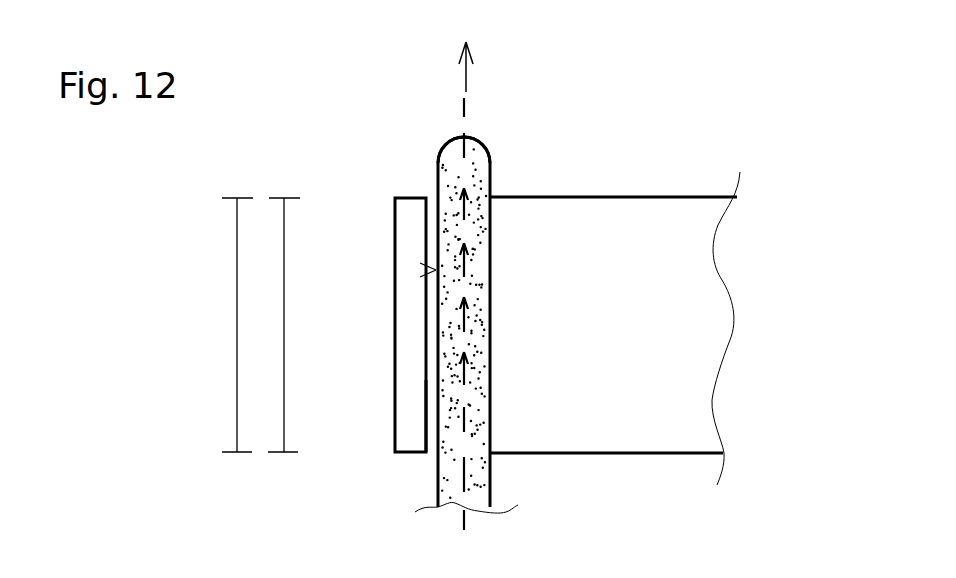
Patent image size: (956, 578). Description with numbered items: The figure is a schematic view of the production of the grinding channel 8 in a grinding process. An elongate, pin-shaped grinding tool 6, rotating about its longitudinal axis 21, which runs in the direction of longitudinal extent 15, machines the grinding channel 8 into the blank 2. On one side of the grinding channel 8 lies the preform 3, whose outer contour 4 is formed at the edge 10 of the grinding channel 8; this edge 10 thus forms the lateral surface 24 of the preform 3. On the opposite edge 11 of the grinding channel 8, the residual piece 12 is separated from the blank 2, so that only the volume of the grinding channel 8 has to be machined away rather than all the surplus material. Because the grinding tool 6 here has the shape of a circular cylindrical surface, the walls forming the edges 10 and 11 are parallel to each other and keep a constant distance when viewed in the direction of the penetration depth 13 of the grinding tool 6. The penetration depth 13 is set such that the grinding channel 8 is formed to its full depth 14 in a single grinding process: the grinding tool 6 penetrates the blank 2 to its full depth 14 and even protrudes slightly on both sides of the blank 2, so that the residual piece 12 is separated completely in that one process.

The blank 2 is at (668, 184).
The preform 3 is at (693, 275).
The outer contour 4 is at (490, 243).
The grinding tool 6 is at (480, 167).
The grinding channel 8 is at (436, 270).
The edge 10 is at (490, 395).
The edge 11 is at (425, 412).
The residual piece 12 is at (412, 343).
The penetration depth 13 is at (237, 293).
The full depth 14 is at (284, 238).
The direction of longitudinal extent 15 is at (468, 73).
The longitudinal axis 21 is at (463, 115).
The lateral surface 24 is at (490, 336).